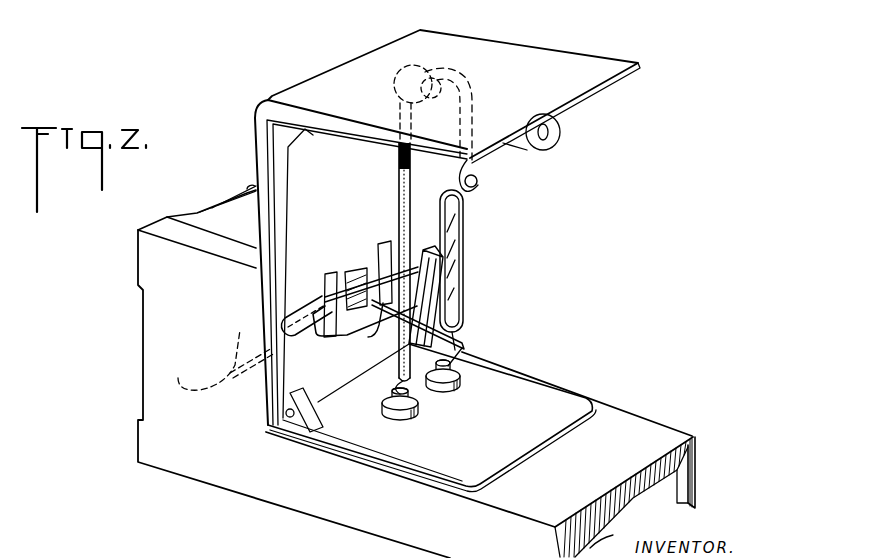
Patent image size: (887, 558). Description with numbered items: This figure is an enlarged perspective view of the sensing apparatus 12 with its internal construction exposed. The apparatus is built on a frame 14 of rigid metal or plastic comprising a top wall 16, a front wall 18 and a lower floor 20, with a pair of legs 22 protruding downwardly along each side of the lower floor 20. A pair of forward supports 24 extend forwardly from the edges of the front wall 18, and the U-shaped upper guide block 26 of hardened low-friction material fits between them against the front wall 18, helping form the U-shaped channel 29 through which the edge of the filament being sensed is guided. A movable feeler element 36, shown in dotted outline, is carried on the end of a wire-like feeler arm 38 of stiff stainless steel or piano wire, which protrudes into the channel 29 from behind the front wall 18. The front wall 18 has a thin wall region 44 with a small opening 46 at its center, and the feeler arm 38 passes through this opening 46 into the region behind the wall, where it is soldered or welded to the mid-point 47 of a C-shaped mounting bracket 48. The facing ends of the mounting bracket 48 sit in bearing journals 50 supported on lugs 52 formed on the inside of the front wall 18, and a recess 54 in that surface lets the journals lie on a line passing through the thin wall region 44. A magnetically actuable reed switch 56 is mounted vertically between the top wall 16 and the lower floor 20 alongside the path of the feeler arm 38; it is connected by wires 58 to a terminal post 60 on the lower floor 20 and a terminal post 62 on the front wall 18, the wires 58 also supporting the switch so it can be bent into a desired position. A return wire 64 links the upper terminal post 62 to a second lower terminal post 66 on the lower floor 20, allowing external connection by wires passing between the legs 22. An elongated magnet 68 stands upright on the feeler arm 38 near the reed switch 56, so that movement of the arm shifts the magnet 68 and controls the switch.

The sensing apparatus 12 is at (240, 88).
The frame 14 is at (213, 467).
The top wall 16 is at (508, 48).
The front wall 18 is at (320, 152).
The lower floor 20 is at (566, 400).
The legs 22 is at (680, 493).
The forward supports 24 is at (150, 246).
The upper guide block 26 is at (196, 212).
The U-shaped channel 29 is at (210, 202).
The feeler element 36 is at (178, 378).
The feeler arm 38 is at (247, 338).
The thin wall region 44 is at (352, 276).
The opening 46 is at (360, 270).
The mid-point 47 is at (376, 330).
The C-shaped mounting bracket 48 is at (352, 340).
The bearing journals 50 is at (318, 297).
The lugs 52 is at (327, 272).
The recess 54 is at (304, 328).
The reed switch 56 is at (460, 218).
The wires 58 is at (480, 180).
The terminal post 60 is at (452, 385).
The terminal post 62 is at (426, 68).
The return wire 64 is at (398, 169).
The second lower terminal post 66 is at (406, 418).
The magnet 68 is at (430, 287).